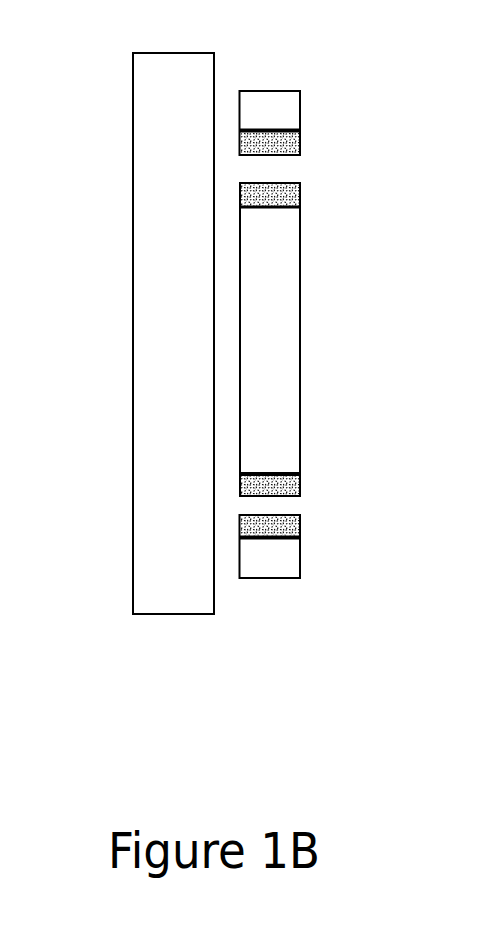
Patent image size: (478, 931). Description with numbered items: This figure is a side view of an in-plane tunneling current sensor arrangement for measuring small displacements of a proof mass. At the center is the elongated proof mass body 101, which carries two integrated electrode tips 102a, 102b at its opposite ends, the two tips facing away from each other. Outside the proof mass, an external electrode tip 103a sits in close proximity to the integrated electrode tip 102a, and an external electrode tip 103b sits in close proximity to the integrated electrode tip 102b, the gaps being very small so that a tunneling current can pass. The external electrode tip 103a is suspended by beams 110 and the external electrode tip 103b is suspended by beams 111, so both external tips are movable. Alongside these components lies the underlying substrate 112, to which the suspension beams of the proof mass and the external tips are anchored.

The proof mass body 101 is at (275, 342).
The integrated electrode tip 102a is at (275, 189).
The integrated electrode tip 102b is at (275, 492).
The external electrode tip 103a is at (274, 147).
The external electrode tip 103b is at (287, 520).
The beams 110 is at (289, 92).
The beams 111 is at (287, 572).
The substrate 112 is at (147, 355).